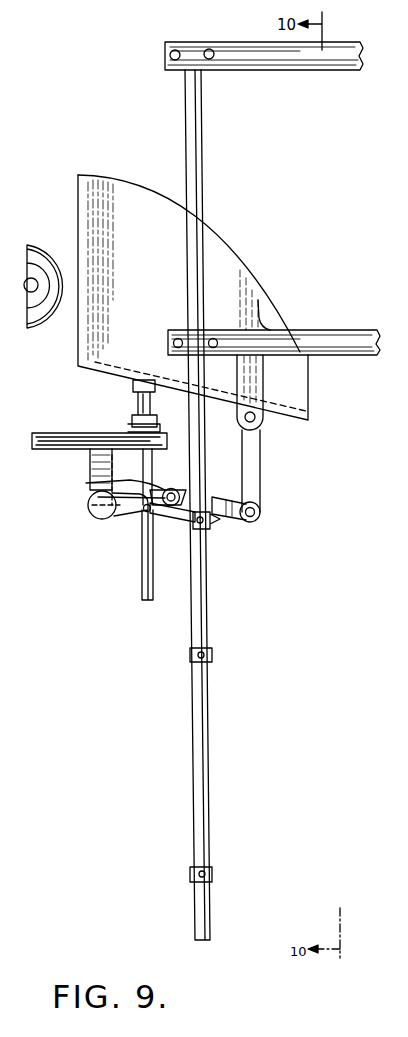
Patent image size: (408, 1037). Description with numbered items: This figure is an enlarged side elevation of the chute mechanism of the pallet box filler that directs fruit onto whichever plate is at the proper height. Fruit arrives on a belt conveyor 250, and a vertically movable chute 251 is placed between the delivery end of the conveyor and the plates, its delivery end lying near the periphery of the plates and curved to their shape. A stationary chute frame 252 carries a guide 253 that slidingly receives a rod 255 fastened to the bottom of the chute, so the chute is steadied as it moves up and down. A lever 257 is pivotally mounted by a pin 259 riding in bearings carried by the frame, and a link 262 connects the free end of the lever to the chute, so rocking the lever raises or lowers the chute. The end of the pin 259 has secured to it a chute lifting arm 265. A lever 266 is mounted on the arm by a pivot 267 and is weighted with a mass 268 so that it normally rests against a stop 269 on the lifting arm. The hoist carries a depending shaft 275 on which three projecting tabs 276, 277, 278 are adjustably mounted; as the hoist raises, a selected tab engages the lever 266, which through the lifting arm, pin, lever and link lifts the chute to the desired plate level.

The belt conveyor 250 is at (40, 246).
The vertically movable chute 251 is at (240, 268).
The stationary chute frame 252 is at (92, 432).
The guide 253 is at (152, 463).
The rod 255 is at (145, 592).
The lever 257 is at (230, 518).
The pin 259 is at (178, 492).
The link 262 is at (258, 470).
The chute lifting arm 265 is at (98, 476).
The lever 266 is at (171, 514).
The pivot 267 is at (142, 512).
The mass 268 is at (92, 515).
The stop 269 is at (186, 497).
The depending shaft 275 is at (203, 132).
The projecting tab 276 is at (195, 530).
The projecting tab 277 is at (190, 655).
The projecting tab 278 is at (190, 874).